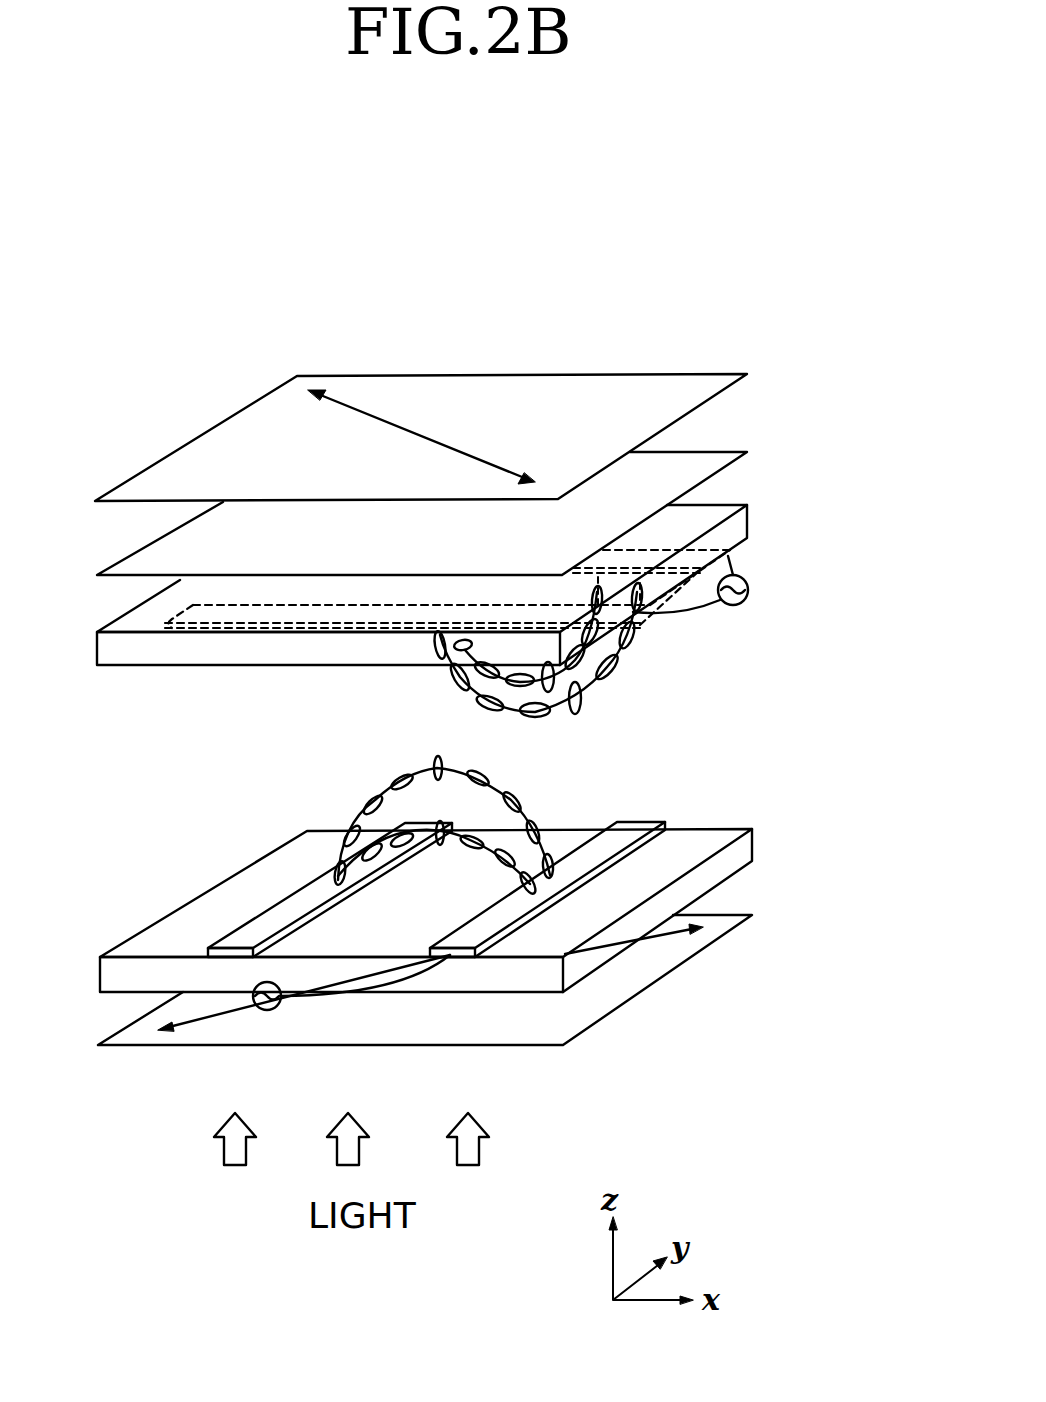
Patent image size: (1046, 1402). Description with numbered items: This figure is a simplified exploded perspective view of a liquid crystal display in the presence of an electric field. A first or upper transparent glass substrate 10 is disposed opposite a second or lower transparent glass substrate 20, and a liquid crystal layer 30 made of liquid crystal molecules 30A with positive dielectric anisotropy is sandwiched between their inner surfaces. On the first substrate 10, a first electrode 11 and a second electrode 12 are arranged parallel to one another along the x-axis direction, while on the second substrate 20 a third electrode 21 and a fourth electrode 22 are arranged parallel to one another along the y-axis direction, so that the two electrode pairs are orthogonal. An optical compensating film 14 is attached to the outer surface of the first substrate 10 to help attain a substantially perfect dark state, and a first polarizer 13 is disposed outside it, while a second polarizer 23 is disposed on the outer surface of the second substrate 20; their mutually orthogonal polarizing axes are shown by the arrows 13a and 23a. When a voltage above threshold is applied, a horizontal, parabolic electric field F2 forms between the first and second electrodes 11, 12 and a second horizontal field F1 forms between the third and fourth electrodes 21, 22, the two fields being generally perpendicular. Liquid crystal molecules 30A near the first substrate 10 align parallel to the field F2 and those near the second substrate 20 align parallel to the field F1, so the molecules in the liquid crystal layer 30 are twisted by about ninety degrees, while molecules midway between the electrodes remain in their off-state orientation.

The first substrate 10 is at (747, 518).
The first electrode 11 is at (636, 620).
The second electrode 12 is at (727, 553).
The first polarizer 13 is at (713, 372).
The arrow indicating first polarizing axis 13a is at (407, 423).
The optical compensating film 14 is at (747, 452).
The second substrate 20 is at (752, 843).
The third electrode 21 is at (227, 953).
The fourth electrode 22 is at (447, 953).
The second polarizer 23 is at (623, 1003).
The arrow indicating second polarizing axis 23a is at (297, 1003).
The liquid crystal layer 30 is at (559, 655).
The liquid crystal molecules 30A is at (471, 818).
The electric field F1 is at (380, 785).
The electric field F2 is at (450, 690).